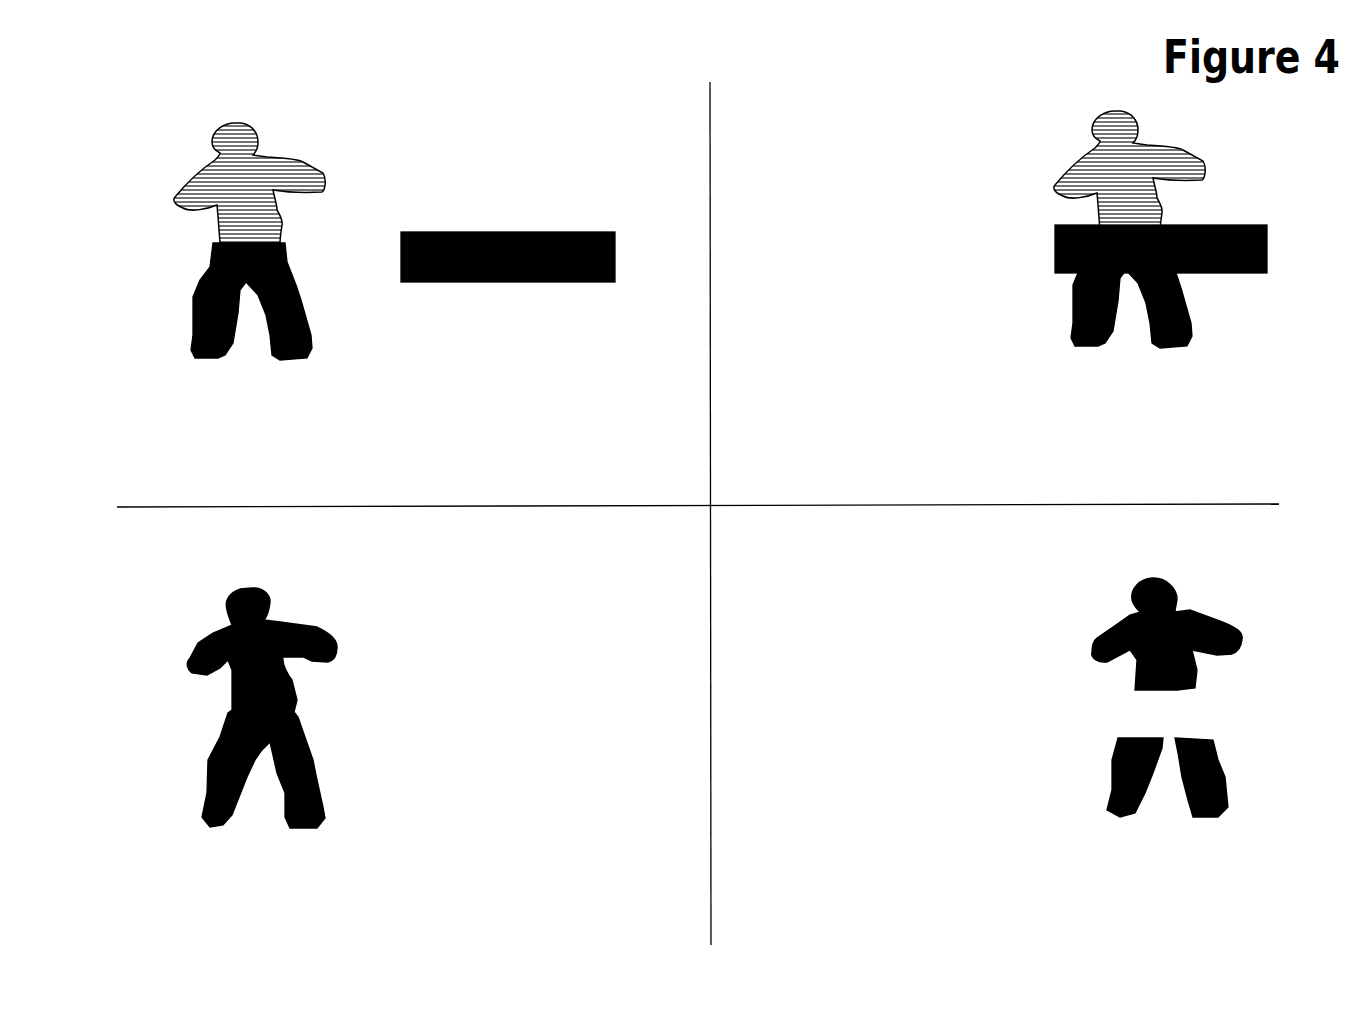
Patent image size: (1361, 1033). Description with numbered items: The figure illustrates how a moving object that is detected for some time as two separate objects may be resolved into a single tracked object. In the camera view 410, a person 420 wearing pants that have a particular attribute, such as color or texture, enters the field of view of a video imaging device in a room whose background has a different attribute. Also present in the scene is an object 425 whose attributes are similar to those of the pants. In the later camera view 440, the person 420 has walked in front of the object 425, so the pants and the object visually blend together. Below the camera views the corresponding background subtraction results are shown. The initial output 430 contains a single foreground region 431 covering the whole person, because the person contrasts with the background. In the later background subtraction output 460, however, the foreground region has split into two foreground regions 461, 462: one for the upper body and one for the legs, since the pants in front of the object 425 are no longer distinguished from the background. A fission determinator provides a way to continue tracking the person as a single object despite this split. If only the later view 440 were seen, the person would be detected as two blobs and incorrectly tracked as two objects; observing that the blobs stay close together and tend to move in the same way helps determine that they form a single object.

The camera view 410 is at (429, 290).
The person 420 is at (249, 226).
The object 425 is at (512, 240).
The output 430 is at (436, 680).
The foreground region 431 is at (262, 698).
The later camera view 440 is at (1005, 299).
The later background subtraction output 460 is at (1007, 674).
The foreground region 461 is at (1174, 634).
The foreground region 462 is at (1188, 777).